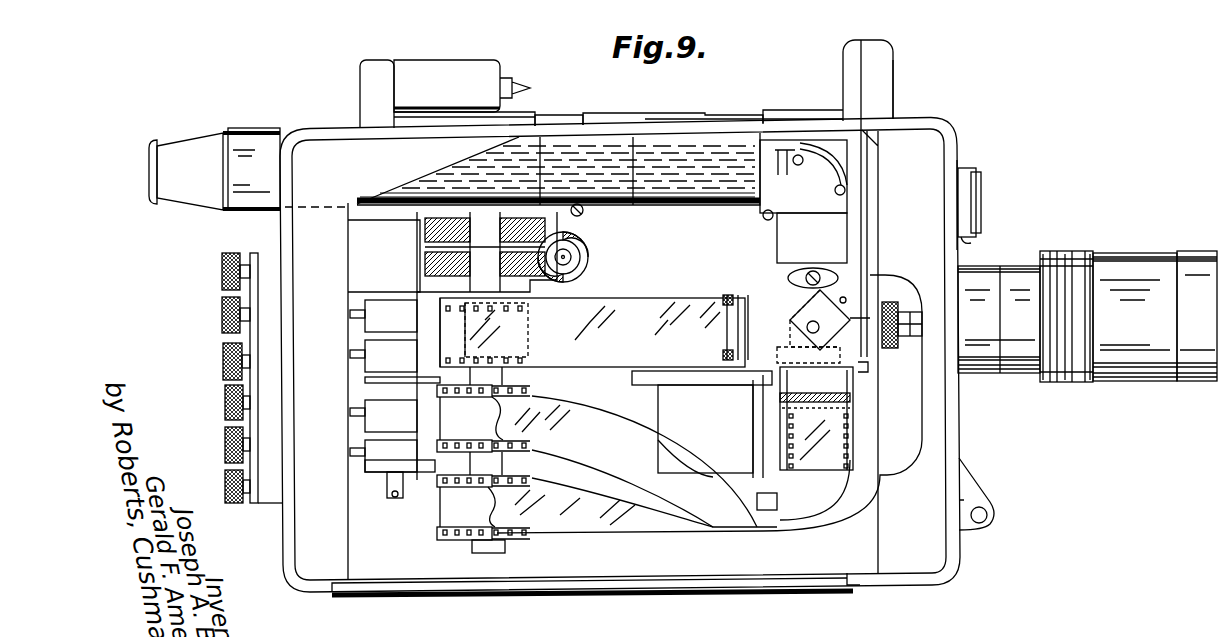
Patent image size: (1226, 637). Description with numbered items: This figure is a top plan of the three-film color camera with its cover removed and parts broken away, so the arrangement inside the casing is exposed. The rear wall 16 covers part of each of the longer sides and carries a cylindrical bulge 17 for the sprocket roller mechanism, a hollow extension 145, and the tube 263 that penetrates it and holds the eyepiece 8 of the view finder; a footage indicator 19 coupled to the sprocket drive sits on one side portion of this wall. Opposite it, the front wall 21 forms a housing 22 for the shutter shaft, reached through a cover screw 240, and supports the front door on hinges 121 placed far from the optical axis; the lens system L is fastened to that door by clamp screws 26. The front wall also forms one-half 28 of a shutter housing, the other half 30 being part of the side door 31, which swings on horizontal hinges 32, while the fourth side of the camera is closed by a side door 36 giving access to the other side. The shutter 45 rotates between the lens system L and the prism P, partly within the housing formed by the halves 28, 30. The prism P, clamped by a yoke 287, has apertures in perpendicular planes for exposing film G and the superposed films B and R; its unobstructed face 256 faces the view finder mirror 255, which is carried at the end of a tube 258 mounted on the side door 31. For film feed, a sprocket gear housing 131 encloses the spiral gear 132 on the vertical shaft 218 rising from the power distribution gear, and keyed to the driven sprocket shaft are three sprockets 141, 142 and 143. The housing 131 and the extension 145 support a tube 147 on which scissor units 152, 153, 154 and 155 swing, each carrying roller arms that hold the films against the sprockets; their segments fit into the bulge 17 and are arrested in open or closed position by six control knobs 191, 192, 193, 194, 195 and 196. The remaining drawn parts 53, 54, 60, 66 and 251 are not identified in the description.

The eyepiece 8 is at (258, 140).
The rear wall 16 is at (343, 128).
The cylindrical bulge 17 is at (273, 500).
The footage indicator 19 is at (432, 82).
The front wall 21 is at (958, 140).
The housing for the shutter shaft 22 is at (971, 243).
The clamp screws 26 is at (896, 302).
The one-half of shutter housing 28 is at (885, 63).
The other half of shutter housing 30 is at (852, 65).
The side door 31 is at (782, 125).
The horizontal hinges 32 is at (594, 115).
The side door 36 is at (770, 584).
The shutter 45 is at (922, 322).
The guide plate 53 is at (632, 380).
The bracket 54 is at (760, 497).
The film guide 60 is at (840, 355).
The lamp housing 66 is at (812, 238).
The hinge 121 is at (995, 520).
The sprocket gear housing 131 is at (586, 247).
The spiral gear 132 is at (585, 278).
The sprocket 141 is at (536, 502).
The sprocket 142 is at (503, 409).
The sprocket 143 is at (447, 332).
The hollow extension 145 is at (452, 391).
The tube 147 is at (393, 497).
The scissor unit 152 is at (392, 455).
The scissor unit 153 is at (383, 416).
The scissor unit 154 is at (395, 361).
The scissor unit 155 is at (383, 316).
The control knob 191 is at (222, 270).
The control knob 192 is at (222, 308).
The control knob 193 is at (223, 357).
The control knob 194 is at (225, 396).
The control knob 195 is at (225, 435).
The control knob 196 is at (225, 478).
The shaft 218 is at (570, 258).
The cover screw 240 is at (981, 200).
The sound head housing 251 is at (710, 426).
The mirror 255 is at (838, 165).
The face of the prism 256 is at (787, 293).
The tube 258 is at (680, 145).
The tube 263 is at (512, 150).
The yoke 287 is at (780, 308).
The film B is at (660, 528).
The film G is at (640, 308).
The lens system L is at (1128, 273).
The prism P is at (807, 313).
The film R is at (603, 415).